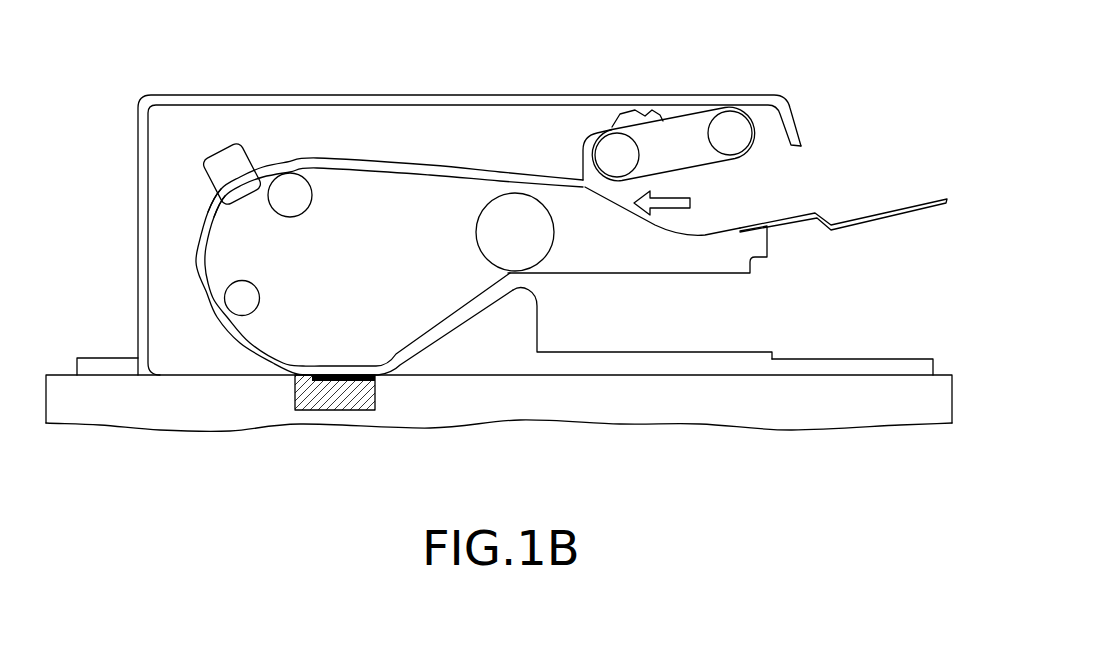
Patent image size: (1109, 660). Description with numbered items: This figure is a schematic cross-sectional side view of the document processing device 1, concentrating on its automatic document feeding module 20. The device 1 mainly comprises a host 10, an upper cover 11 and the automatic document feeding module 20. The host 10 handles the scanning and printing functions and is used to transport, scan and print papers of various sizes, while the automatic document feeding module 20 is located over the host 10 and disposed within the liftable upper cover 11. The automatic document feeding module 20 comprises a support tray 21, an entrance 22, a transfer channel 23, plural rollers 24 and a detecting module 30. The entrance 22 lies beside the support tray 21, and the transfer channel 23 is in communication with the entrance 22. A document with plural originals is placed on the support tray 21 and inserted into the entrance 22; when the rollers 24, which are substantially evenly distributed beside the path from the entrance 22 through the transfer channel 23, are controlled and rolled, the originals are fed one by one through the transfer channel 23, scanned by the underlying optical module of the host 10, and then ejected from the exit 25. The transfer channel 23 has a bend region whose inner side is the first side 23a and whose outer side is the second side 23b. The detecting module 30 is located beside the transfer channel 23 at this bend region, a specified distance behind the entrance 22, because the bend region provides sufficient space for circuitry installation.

The document processing device 1 is at (223, 67).
The host 10 is at (198, 418).
The upper cover 11 is at (850, 367).
The automatic document feeding module 20 is at (383, 95).
The support tray 21 is at (858, 212).
The entrance 22 is at (730, 213).
The transfer channel 23 is at (450, 176).
The first side 23a is at (218, 212).
The second side 23b is at (205, 196).
The rollers 24 is at (305, 195).
The exit 25 is at (537, 281).
The detecting module 30 is at (235, 160).